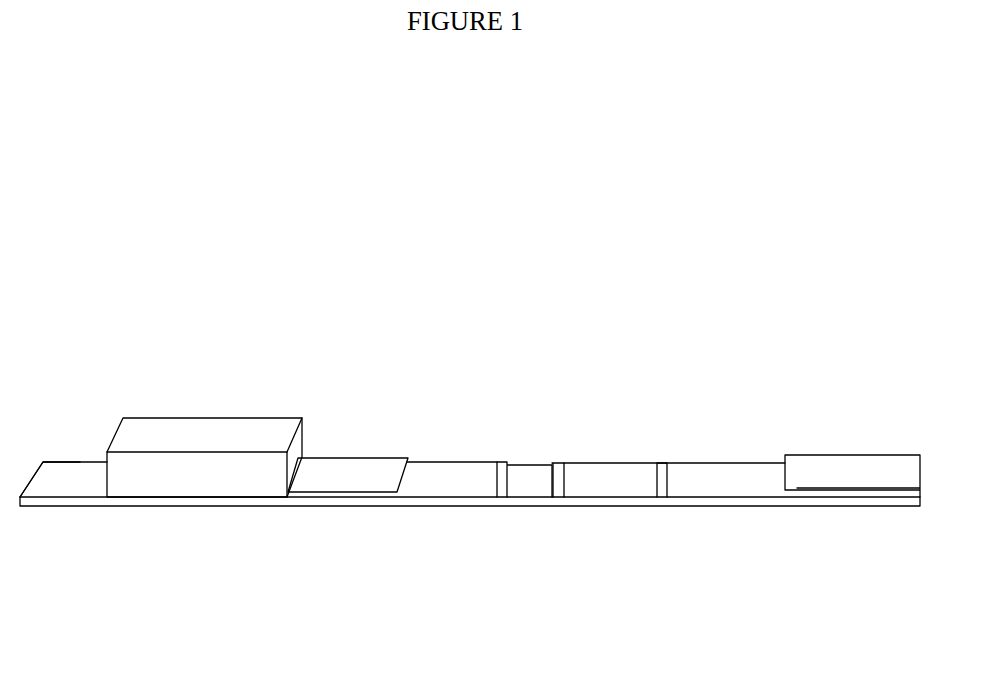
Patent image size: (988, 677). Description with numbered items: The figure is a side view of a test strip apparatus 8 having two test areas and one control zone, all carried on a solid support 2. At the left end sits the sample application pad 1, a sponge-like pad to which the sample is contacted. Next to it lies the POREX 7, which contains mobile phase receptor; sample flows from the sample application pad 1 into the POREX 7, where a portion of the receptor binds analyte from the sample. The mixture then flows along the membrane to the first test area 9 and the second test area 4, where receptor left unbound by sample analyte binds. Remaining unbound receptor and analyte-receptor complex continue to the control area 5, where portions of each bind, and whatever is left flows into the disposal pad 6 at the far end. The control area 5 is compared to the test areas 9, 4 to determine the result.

The sample application pad 1 is at (198, 432).
The solid support 2 is at (55, 505).
The test area 4 is at (563, 462).
The control area 5 is at (665, 460).
The disposal pad 6 is at (848, 465).
The POREX 7 is at (353, 470).
The test strip apparatus 8 is at (20, 575).
The test area 9 is at (500, 465).